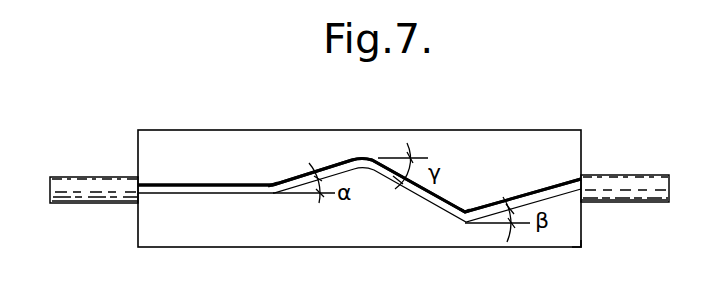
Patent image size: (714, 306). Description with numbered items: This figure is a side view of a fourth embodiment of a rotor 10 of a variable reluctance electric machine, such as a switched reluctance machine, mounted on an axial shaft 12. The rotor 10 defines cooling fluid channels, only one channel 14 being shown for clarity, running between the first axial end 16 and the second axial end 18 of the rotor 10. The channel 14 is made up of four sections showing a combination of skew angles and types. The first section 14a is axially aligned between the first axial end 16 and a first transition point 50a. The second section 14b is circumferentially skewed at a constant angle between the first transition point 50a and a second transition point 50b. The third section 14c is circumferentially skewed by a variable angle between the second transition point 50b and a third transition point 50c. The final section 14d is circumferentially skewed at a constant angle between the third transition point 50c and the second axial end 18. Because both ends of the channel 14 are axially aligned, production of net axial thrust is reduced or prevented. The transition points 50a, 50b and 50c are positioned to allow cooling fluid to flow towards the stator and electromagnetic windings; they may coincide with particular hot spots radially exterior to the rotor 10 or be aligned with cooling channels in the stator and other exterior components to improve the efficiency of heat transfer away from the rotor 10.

The rotor 10 is at (572, 239).
The axial shaft 12 is at (77, 183).
The channel 14 is at (233, 184).
The first section 14a is at (181, 186).
The second section 14b is at (290, 182).
The third section 14c is at (443, 208).
The final section 14d is at (536, 197).
The first axial end 16 is at (138, 150).
The second axial end 18 is at (603, 155).
The first transition point 50a is at (272, 193).
The second transition point 50b is at (352, 168).
The third transition point 50c is at (467, 210).